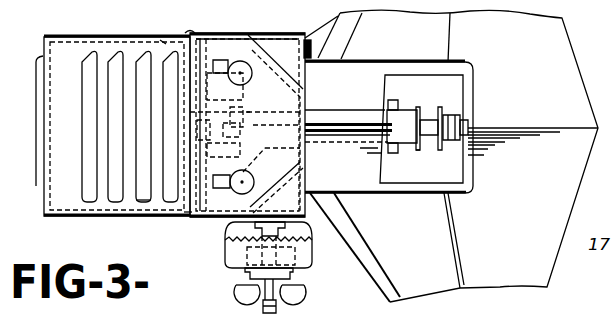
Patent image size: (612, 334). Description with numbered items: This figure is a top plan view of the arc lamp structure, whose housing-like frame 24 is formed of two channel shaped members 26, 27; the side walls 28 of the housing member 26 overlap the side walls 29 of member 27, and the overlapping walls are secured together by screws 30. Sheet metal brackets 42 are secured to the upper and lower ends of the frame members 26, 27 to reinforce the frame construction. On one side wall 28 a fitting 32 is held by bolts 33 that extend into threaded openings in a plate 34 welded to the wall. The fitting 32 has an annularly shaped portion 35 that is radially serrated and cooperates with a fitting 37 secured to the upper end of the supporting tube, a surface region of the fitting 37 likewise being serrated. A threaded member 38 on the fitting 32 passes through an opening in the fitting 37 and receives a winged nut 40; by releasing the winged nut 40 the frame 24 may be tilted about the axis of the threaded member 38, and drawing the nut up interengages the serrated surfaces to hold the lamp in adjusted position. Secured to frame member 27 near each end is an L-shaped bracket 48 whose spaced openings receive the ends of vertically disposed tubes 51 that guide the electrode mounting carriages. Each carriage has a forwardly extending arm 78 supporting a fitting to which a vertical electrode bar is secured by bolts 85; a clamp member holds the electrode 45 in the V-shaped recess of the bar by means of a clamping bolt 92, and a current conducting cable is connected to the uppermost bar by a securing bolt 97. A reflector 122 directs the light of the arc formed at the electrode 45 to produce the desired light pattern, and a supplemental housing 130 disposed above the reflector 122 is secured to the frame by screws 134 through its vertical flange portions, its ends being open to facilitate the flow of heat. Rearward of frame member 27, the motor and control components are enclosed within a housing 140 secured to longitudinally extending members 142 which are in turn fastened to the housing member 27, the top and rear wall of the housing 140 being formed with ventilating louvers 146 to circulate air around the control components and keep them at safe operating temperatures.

The housing-like frame 24 is at (270, 25).
The channel shaped member 26 is at (306, 79).
The channel shaped member 27 is at (186, 218).
The side walls 28 is at (224, 37).
The side walls 29 is at (160, 40).
The screws 30 is at (205, 34).
The fitting 32 is at (347, 216).
The bolts 33 is at (366, 237).
The plate 34 is at (287, 216).
The annularly shaped portion 35 is at (310, 243).
The fitting 37 is at (309, 265).
The threaded member 38 is at (258, 304).
The winged nut 40 is at (236, 295).
The sheet metal brackets 42 is at (321, 36).
The electrode 45 is at (438, 113).
The L-shaped bracket 48 is at (195, 112).
The vertically disposed tubes 51 is at (244, 62).
The forwardly extending arm 78 is at (363, 112).
The bolts 85 is at (456, 116).
The clamping bolt 92 is at (464, 126).
The securing bolt 97 is at (420, 147).
The reflector 122 is at (568, 34).
The supplemental housing 130 is at (474, 77).
The screws 134 is at (356, 34).
The housing 140 is at (59, 48).
The longitudinally extending members 142 is at (141, 206).
The ventilating louvers 146 is at (90, 202).